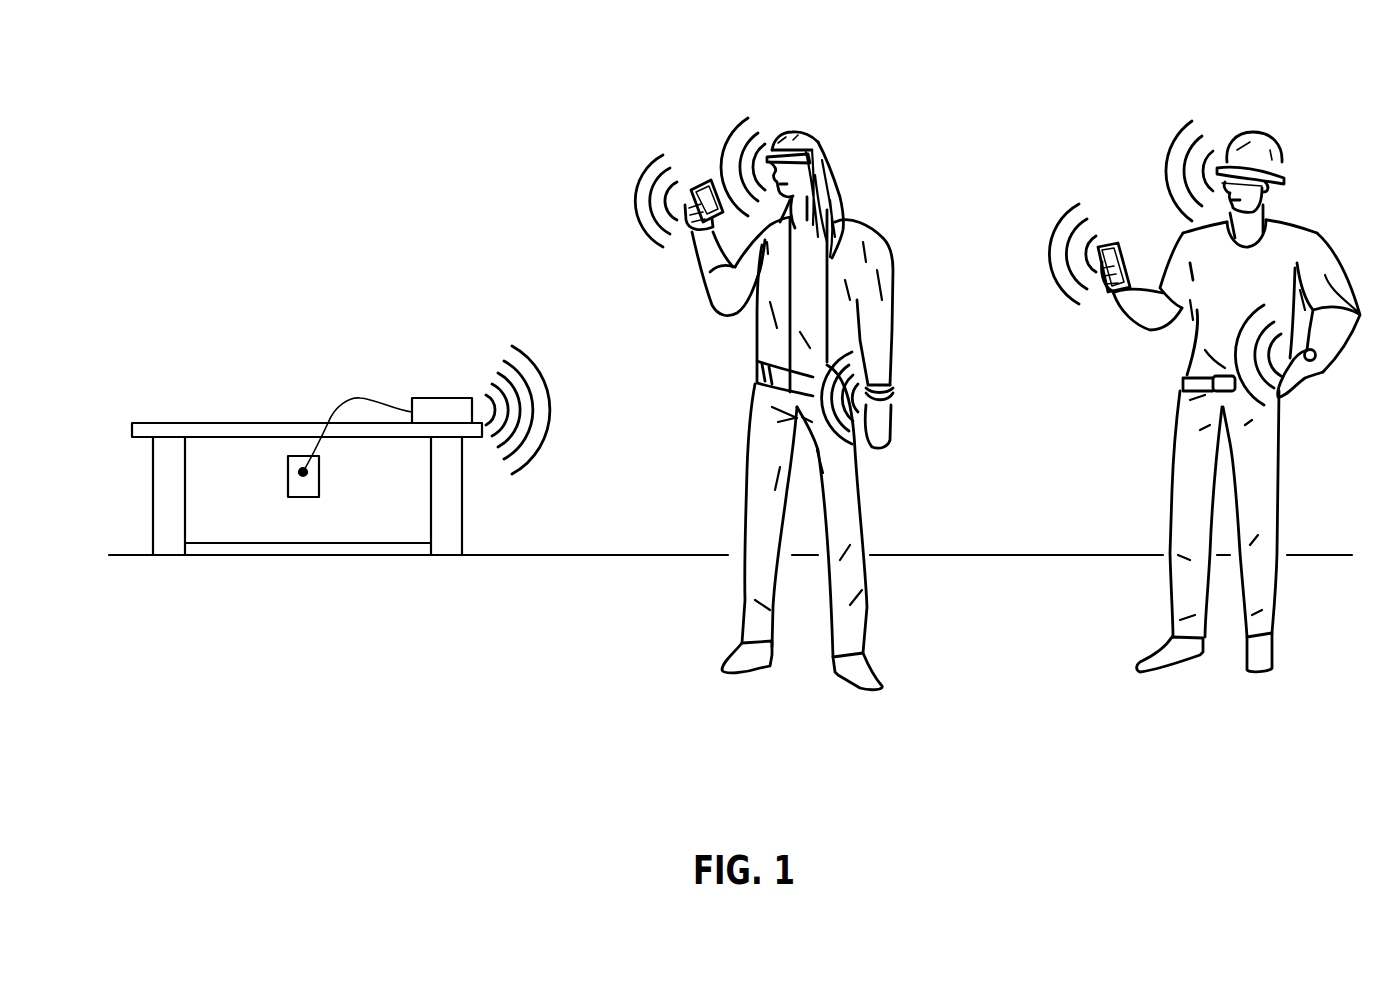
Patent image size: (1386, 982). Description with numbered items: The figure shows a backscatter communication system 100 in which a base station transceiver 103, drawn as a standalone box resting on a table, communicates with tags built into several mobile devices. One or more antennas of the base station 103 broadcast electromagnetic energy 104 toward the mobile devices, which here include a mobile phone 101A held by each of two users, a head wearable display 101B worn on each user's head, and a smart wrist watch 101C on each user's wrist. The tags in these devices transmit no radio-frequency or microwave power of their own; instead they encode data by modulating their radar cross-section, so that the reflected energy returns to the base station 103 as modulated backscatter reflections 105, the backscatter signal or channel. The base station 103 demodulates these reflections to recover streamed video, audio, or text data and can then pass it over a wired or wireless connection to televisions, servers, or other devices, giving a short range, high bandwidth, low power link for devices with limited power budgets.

The backscatter communication system 100 is at (508, 189).
The mobile phone 101A is at (696, 166).
The head wearable display 101B is at (809, 141).
The smart wrist watch 101C is at (896, 389).
The base station transceiver 103 is at (457, 420).
The electromagnetic energy 104 is at (530, 468).
The modulated backscatter reflections 105 is at (644, 174).